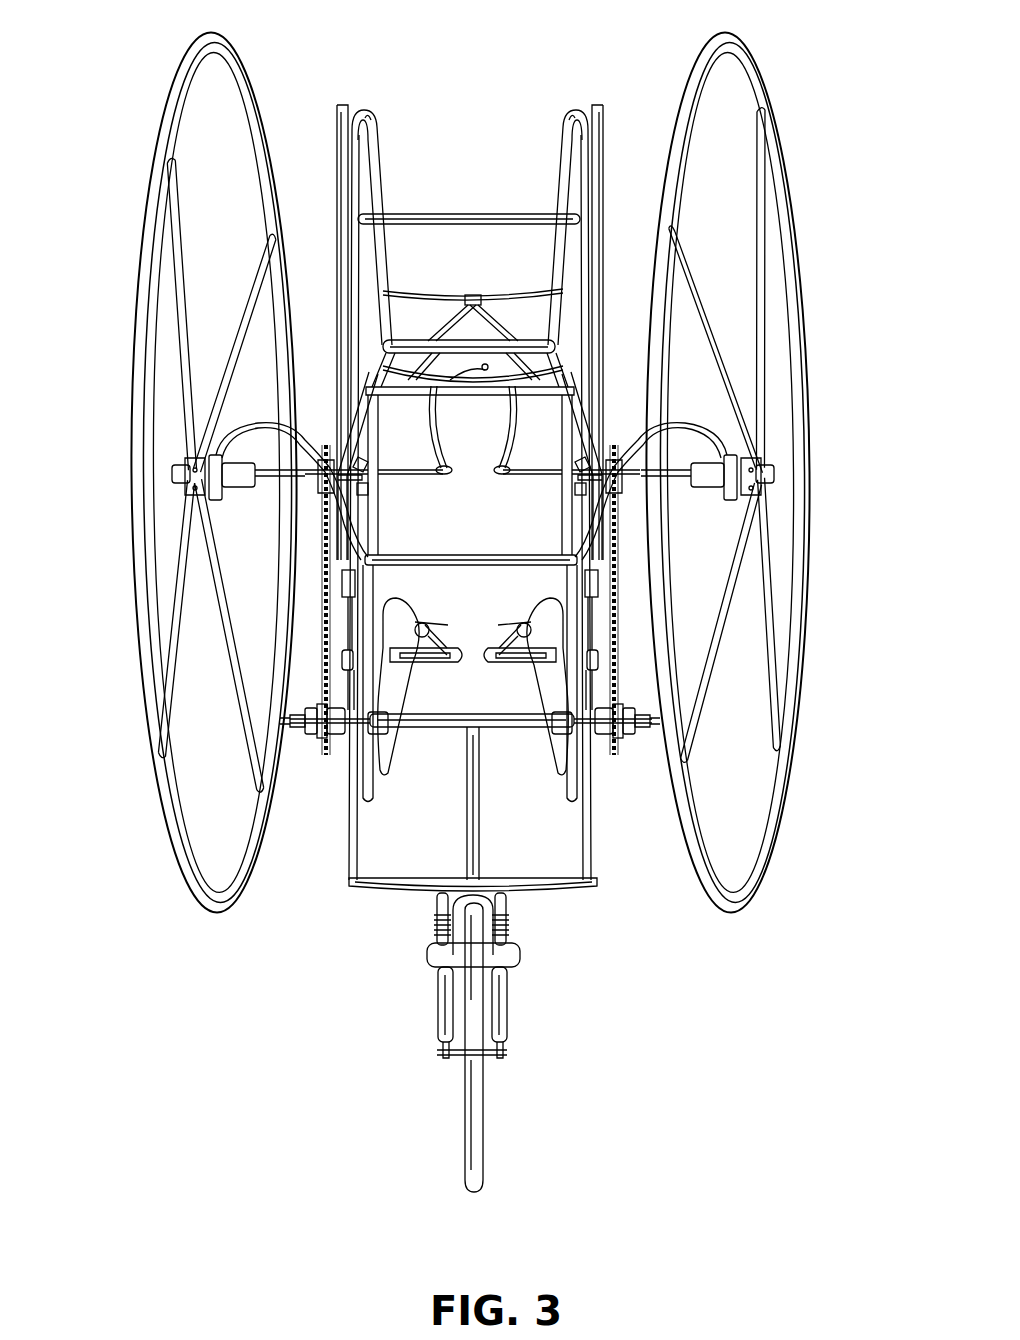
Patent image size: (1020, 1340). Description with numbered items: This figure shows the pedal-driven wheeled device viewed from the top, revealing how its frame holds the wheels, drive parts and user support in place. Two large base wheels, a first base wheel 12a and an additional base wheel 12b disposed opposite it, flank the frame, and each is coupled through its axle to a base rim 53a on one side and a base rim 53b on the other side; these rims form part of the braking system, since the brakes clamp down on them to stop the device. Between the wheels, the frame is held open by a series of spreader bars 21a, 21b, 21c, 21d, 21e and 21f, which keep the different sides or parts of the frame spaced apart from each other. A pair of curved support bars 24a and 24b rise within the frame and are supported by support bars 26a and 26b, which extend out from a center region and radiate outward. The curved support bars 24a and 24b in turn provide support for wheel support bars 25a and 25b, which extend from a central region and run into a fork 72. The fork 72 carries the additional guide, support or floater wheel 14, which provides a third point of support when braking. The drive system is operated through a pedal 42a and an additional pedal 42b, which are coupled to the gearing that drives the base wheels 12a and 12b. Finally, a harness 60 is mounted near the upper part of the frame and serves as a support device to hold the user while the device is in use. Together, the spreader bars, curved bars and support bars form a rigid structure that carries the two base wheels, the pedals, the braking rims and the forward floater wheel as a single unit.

The first base wheel 12a is at (175, 95).
The additional base wheel 12b is at (750, 58).
The floater wheel 14 is at (475, 1140).
The spreader bar 21a is at (460, 214).
The spreader bar 21b is at (472, 430).
The spreader bar 21c is at (418, 341).
The spreader bar 21d is at (465, 555).
The spreader bar 21e is at (468, 730).
The spreader bar 21f is at (380, 878).
The curved support bar 24a is at (366, 110).
The curved support bar 24b is at (556, 132).
The wheel support bar 25a is at (352, 828).
The wheel support bar 25b is at (593, 825).
The support bar 26a is at (340, 105).
The support bar 26b is at (598, 103).
The pedal 42a is at (435, 625).
The additional pedal 42b is at (522, 625).
The base rim 53a is at (215, 415).
The base rim 53b is at (745, 430).
The harness 60 is at (505, 300).
The fork 72 is at (440, 990).